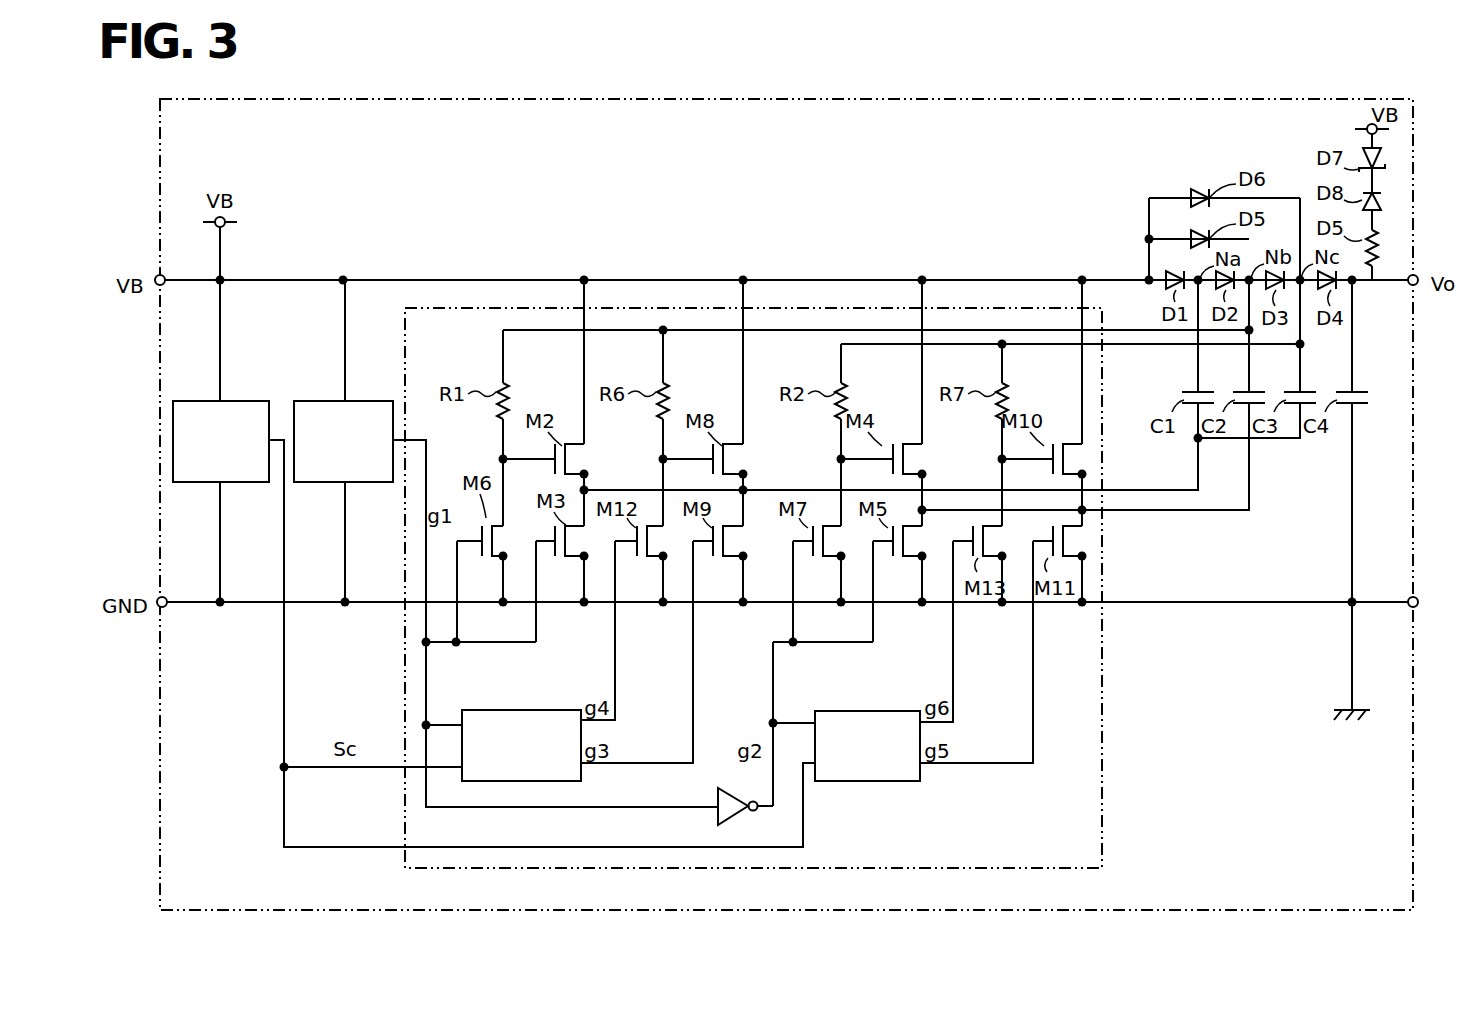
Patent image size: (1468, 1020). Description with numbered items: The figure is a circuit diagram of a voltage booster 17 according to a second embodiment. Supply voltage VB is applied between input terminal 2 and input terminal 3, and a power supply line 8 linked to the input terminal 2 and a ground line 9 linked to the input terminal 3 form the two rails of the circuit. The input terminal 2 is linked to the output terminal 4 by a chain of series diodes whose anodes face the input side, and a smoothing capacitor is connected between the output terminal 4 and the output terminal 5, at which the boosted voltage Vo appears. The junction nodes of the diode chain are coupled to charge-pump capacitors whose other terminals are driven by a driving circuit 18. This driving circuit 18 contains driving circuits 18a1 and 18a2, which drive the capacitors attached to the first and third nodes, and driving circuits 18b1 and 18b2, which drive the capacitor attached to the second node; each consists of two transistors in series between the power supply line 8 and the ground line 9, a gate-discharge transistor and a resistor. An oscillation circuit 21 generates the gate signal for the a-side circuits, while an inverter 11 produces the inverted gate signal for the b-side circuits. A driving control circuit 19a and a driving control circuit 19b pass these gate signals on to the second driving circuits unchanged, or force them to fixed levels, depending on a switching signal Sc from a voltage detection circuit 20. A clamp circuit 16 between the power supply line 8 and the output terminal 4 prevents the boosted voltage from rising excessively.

The input terminal 2 is at (158, 276).
The input terminal 3 is at (160, 597).
The output terminal 4 is at (1416, 276).
The output terminal 5 is at (1416, 598).
The power supply line 8 is at (392, 278).
The power supply line (ground line) 9 is at (378, 600).
The inverter 11 is at (734, 791).
The clamp circuit 16 is at (1307, 156).
The voltage booster 17 is at (840, 99).
The driving circuit 18 is at (818, 308).
The driving circuit 18a1 is at (558, 381).
The driving circuit 18a2 is at (716, 381).
The driving circuit 18b1 is at (876, 381).
The driving circuit 18b2 is at (1036, 381).
The driving control circuit 19a is at (530, 710).
The driving control circuit 19b is at (870, 711).
The voltage detection circuit 20 is at (245, 400).
The oscillation circuit 21 is at (370, 400).